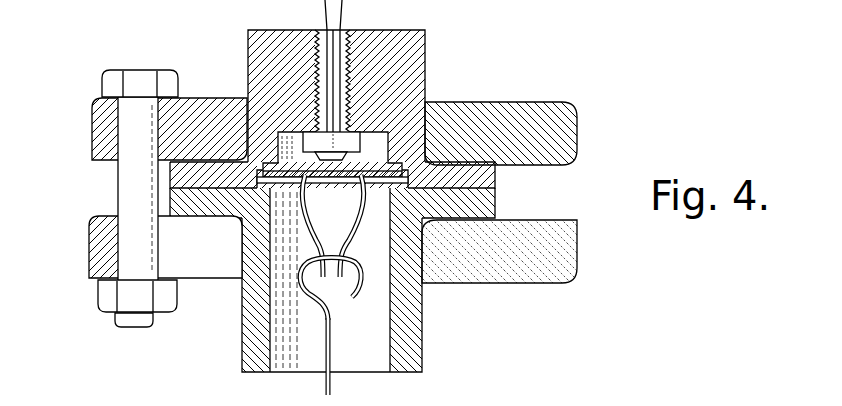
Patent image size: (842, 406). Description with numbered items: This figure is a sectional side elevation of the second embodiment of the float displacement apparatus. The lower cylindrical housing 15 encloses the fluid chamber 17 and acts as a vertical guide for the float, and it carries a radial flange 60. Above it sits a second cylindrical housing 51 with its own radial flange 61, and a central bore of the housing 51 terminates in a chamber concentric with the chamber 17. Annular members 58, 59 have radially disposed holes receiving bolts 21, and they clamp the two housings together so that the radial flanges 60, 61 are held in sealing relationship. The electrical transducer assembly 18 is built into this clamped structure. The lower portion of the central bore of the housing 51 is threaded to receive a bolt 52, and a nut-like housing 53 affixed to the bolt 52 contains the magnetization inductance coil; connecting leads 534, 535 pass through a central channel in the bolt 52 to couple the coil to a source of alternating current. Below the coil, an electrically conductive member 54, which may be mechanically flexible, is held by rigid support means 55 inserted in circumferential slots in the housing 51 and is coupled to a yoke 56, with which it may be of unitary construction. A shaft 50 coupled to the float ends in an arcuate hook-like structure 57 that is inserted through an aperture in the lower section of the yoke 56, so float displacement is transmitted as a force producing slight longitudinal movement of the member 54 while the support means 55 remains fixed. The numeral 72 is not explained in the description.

The cylindrical housing 15 is at (422, 338).
The chamber 17 is at (374, 358).
The electrical transducer assembly 18 is at (462, 84).
The bolts 21 is at (118, 193).
The shaft 50 is at (333, 387).
The cylindrical housing 51 is at (425, 54).
The bolt 52 is at (313, 65).
The nut-like housing 53 is at (300, 137).
The electrically conductive member 54 is at (347, 150).
The rigid support means 55 is at (376, 192).
The yoke 56 is at (302, 222).
The arcuate hook-like structure 57 is at (358, 290).
The annular member 58 is at (578, 126).
The annular member 59 is at (578, 253).
The radial flange 60 is at (495, 209).
The radial flange 61 is at (495, 185).
The reference numeral 72 is at (667, 396).
The connecting lead 534 is at (329, 26).
The connecting lead 535 is at (343, 24).